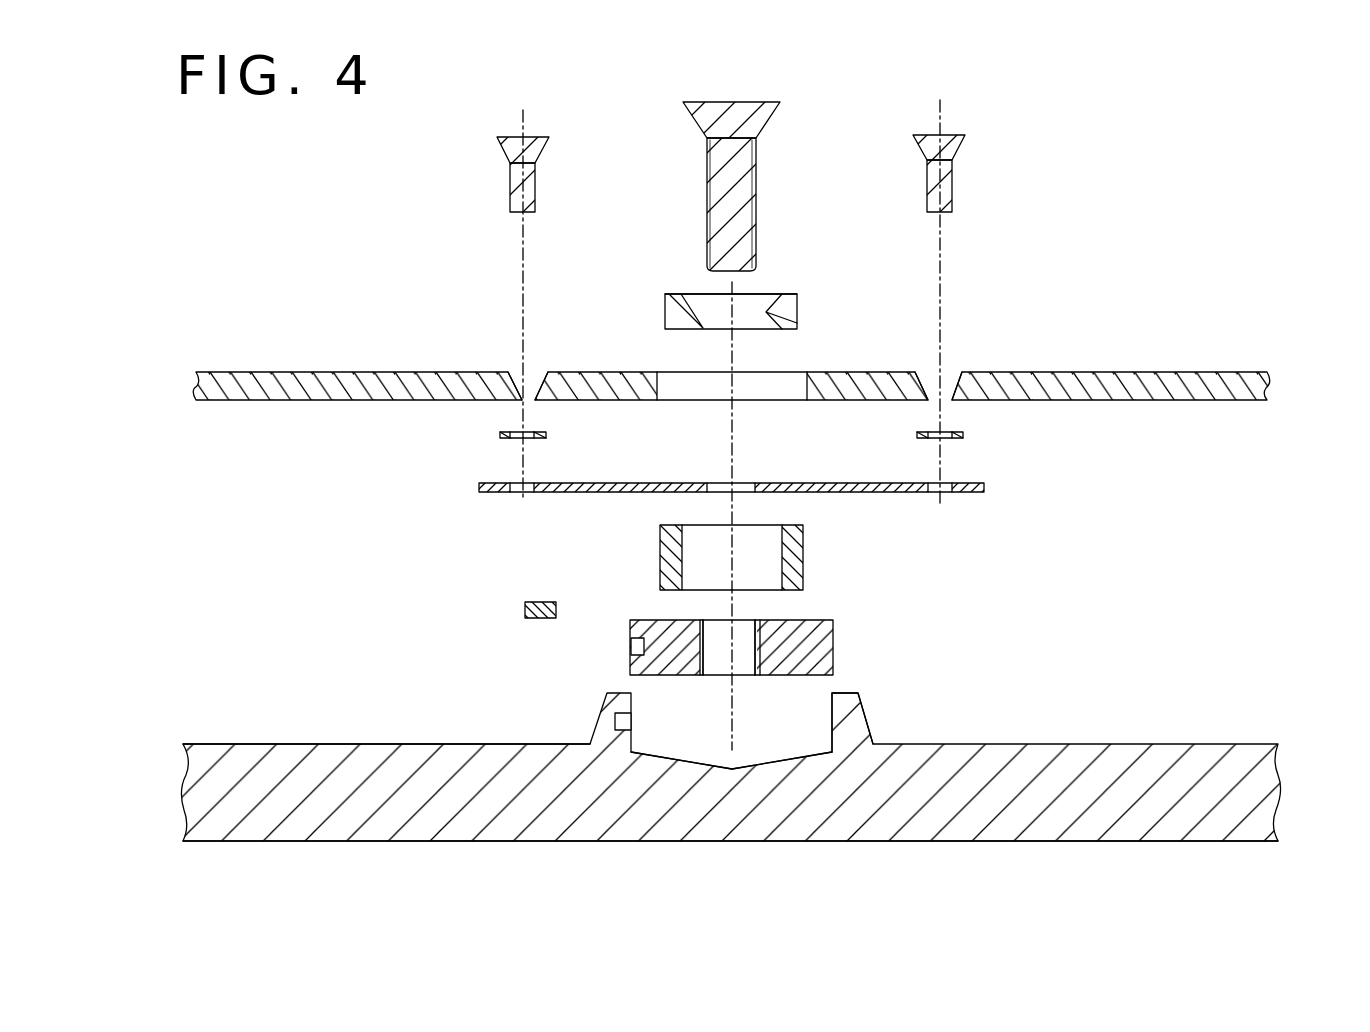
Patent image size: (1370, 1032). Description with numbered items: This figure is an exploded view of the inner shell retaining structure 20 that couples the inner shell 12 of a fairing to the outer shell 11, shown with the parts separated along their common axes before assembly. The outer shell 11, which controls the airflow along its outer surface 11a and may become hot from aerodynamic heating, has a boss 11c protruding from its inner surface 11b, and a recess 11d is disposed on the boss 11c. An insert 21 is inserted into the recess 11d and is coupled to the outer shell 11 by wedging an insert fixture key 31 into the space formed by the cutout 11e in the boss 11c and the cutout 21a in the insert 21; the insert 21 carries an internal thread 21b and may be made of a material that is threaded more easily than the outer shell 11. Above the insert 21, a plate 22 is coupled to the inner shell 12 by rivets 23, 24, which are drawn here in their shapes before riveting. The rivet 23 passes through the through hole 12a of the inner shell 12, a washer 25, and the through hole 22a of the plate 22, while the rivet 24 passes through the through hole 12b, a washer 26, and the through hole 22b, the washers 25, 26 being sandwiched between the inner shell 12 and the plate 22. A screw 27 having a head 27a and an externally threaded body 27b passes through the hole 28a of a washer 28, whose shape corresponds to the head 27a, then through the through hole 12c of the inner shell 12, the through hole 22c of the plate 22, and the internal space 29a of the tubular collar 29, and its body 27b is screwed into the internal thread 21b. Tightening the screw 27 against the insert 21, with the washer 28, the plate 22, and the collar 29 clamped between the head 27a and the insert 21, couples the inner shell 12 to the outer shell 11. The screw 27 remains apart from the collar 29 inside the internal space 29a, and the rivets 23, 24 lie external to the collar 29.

The outer shell 11 is at (759, 795).
The outer surface 11a is at (364, 841).
The inner surface 11b is at (300, 744).
The boss 11c is at (862, 714).
The recess 11d is at (752, 768).
The cutout 11e is at (631, 722).
The inner shell 12 is at (758, 367).
The through hole 12a is at (516, 372).
The through hole 12b is at (944, 372).
The through hole 12c is at (800, 372).
The inner shell retaining structure 20 is at (395, 580).
The insert 21 is at (730, 660).
The cutout 21a is at (631, 648).
The internal thread 21b is at (742, 668).
The plate 22 is at (748, 487).
The through hole 22a is at (514, 494).
The through hole 22b is at (946, 494).
The through hole 22c is at (762, 472).
The rivet 23 is at (516, 140).
The rivet 24 is at (948, 138).
The washer 25 is at (500, 434).
The washer 26 is at (963, 434).
The screw 27 is at (756, 162).
The head 27a is at (757, 118).
The body 27b is at (752, 206).
The washer 28 is at (751, 287).
The hole 28a is at (762, 296).
The collar 29 is at (764, 561).
The internal space 29a is at (760, 582).
The insert fixture key 31 is at (525, 610).